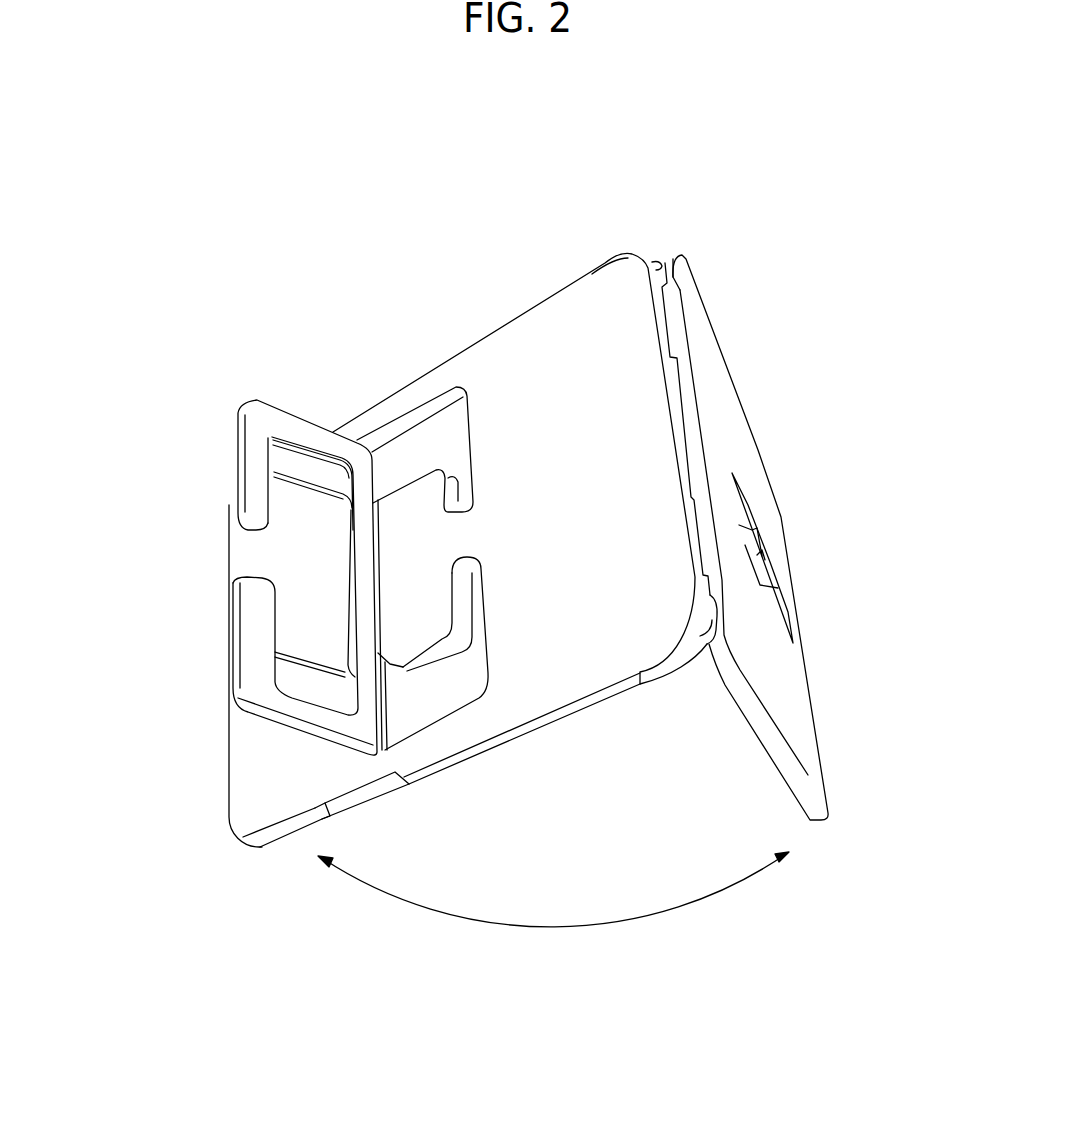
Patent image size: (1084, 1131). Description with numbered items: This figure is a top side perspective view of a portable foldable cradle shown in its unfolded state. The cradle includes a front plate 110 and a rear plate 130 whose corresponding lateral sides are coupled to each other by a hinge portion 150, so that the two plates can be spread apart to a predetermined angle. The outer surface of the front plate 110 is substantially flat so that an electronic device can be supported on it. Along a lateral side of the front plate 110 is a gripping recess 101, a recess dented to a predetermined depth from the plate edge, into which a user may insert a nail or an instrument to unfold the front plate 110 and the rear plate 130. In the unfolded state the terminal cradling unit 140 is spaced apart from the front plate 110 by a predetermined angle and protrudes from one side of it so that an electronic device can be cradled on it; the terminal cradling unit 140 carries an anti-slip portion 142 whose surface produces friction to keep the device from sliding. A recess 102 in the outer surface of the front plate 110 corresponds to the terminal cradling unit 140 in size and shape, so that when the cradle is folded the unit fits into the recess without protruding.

The gripping recess 101 is at (369, 803).
The recess 102 is at (485, 643).
The front plate 110 is at (512, 401).
The rear plate 130 is at (747, 473).
The terminal cradling unit 140 is at (242, 396).
The anti-slip portion 142 is at (300, 470).
The hinge portion 150 is at (703, 522).